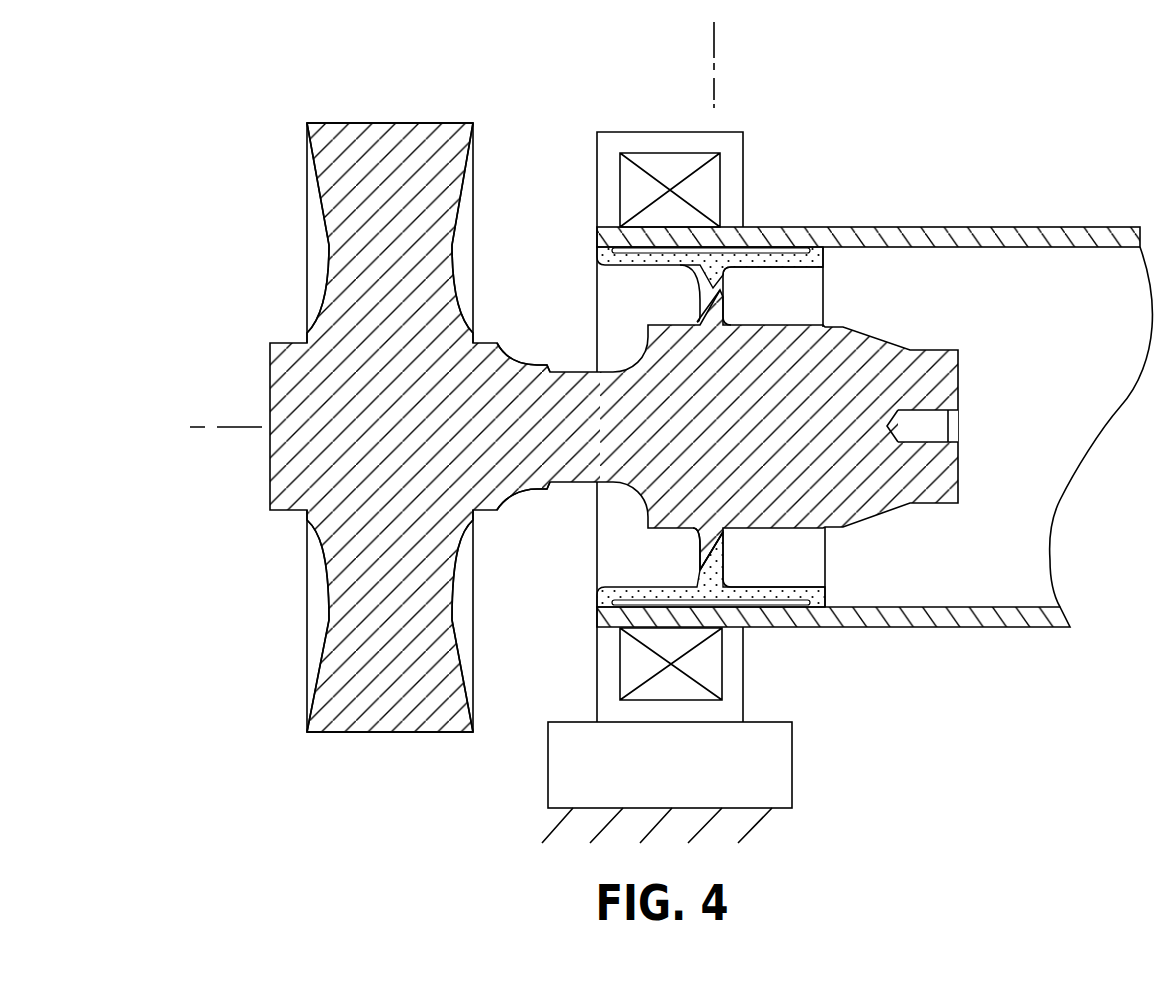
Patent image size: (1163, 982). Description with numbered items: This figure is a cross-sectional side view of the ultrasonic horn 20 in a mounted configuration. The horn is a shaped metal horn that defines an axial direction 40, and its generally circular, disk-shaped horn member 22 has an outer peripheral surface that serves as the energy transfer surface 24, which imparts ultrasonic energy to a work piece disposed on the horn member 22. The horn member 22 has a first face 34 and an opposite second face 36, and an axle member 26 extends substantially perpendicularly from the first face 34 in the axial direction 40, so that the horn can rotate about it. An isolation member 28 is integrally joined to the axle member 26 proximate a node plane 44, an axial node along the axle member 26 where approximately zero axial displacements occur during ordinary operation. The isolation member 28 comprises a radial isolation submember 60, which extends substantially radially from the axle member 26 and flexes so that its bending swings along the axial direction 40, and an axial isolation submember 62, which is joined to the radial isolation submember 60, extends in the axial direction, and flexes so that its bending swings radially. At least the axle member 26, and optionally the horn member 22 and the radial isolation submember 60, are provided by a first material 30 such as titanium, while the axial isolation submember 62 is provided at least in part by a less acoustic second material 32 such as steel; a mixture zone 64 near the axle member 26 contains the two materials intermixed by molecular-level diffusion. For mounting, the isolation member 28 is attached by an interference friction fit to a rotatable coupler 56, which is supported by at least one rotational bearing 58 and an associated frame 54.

The ultrasonic horn 20 is at (465, 122).
The horn member 22 is at (397, 122).
The energy transfer surface 24 is at (345, 733).
The axle member 26 is at (545, 494).
The isolation member 28 is at (822, 572).
The first material 30 is at (893, 347).
The second material 32 is at (748, 629).
The first face 34 is at (473, 325).
The second face 36 is at (303, 333).
The axial direction 40 is at (199, 425).
The node plane 44 is at (714, 35).
The frame 54 is at (788, 770).
The rotatable coupler 56 is at (920, 227).
The rotational bearing 58 is at (735, 183).
The radial isolation submember 60 is at (720, 290).
The axial isolation submember 62 is at (628, 266).
The mixture zone 64 is at (800, 268).